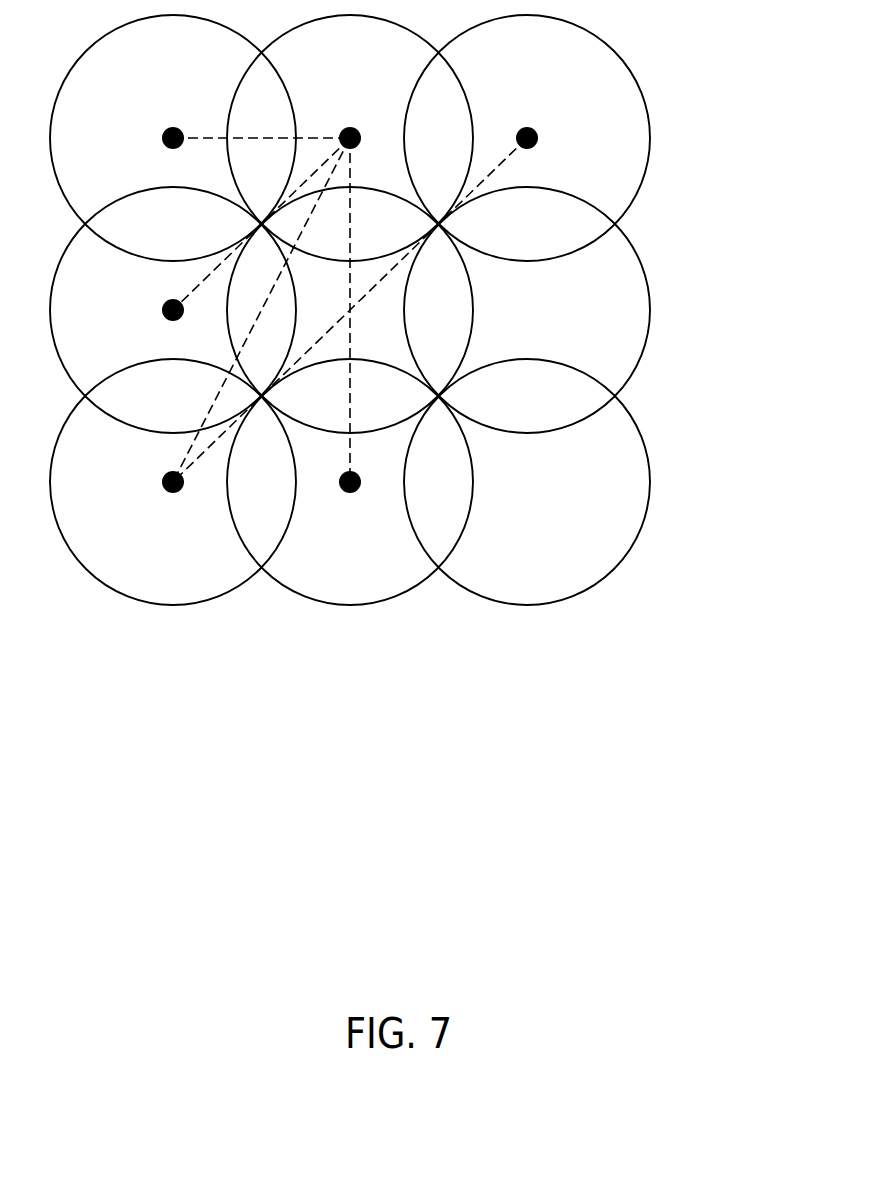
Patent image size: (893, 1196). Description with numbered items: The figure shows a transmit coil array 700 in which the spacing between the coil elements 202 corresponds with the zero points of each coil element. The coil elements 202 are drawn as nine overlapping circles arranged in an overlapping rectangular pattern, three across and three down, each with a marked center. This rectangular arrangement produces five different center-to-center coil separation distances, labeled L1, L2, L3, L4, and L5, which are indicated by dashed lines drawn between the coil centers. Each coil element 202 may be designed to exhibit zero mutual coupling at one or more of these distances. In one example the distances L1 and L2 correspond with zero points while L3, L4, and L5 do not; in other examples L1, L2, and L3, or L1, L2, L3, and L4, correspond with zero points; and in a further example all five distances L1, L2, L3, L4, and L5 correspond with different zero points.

The coil element 202 is at (648, 335).
The coverage layout diagram 700 is at (418, 1005).
The center-to-center coil separation distance L1 is at (261, 123).
The center-to-center coil separation distance L2 is at (261, 224).
The center-to-center coil separation distance L3 is at (337, 310).
The center-to-center coil separation distance L4 is at (261, 310).
The center-to-center coil separation distance L5 is at (354, 310).